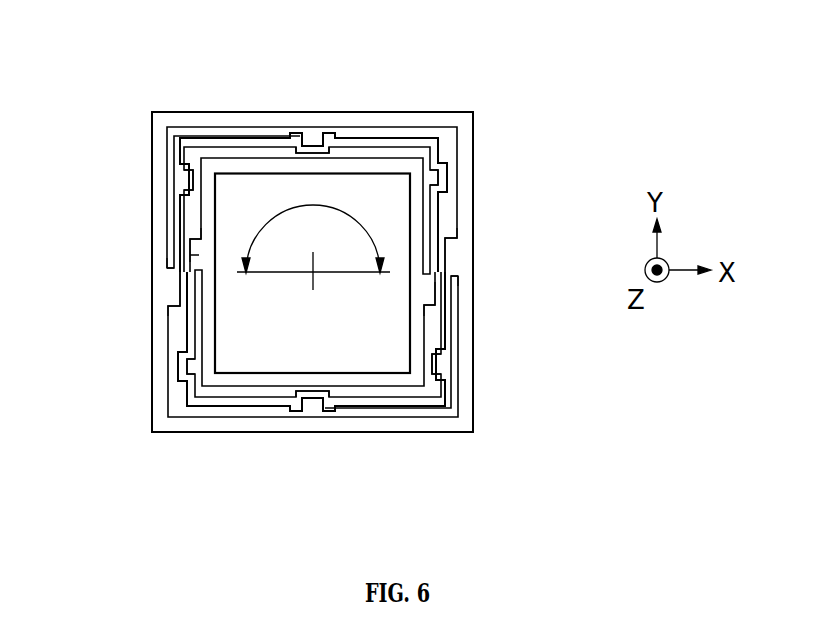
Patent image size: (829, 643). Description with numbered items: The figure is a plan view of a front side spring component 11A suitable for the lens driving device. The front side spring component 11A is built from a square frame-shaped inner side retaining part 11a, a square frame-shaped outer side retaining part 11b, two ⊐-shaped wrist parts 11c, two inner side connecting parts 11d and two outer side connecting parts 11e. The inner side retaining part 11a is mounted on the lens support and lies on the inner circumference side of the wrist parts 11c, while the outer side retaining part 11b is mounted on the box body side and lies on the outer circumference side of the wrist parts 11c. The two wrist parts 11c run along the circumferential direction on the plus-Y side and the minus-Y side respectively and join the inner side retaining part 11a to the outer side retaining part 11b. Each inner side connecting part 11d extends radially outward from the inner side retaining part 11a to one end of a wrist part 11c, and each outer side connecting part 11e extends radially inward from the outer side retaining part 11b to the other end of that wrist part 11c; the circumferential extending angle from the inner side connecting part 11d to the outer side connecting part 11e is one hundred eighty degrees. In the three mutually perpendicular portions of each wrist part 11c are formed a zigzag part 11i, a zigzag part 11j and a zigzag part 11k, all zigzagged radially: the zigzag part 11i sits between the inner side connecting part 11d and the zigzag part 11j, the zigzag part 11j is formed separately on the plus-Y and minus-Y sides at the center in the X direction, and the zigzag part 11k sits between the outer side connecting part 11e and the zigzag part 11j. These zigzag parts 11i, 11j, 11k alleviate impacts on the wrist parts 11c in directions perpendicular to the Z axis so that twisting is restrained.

The front side spring component 11A is at (156, 112).
The inner side retaining part 11a is at (212, 333).
The outer side retaining part 11b is at (232, 119).
The wrist part 11c is at (418, 137).
The inner side connecting part 11d is at (171, 258).
The outer side connecting part 11e is at (170, 295).
The zigzag part 11i is at (450, 157).
The zigzag part 11j is at (310, 131).
The zigzag part 11k is at (187, 176).